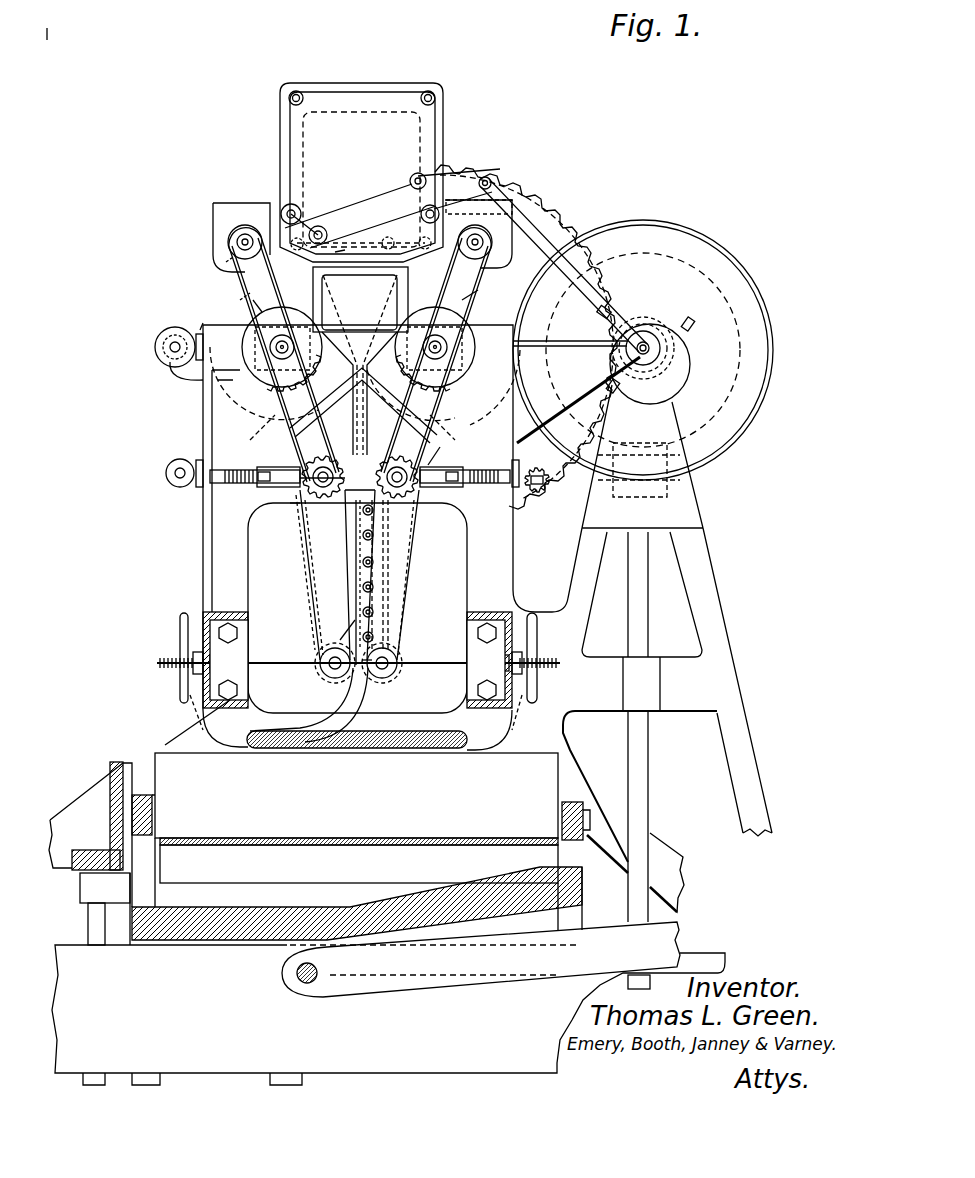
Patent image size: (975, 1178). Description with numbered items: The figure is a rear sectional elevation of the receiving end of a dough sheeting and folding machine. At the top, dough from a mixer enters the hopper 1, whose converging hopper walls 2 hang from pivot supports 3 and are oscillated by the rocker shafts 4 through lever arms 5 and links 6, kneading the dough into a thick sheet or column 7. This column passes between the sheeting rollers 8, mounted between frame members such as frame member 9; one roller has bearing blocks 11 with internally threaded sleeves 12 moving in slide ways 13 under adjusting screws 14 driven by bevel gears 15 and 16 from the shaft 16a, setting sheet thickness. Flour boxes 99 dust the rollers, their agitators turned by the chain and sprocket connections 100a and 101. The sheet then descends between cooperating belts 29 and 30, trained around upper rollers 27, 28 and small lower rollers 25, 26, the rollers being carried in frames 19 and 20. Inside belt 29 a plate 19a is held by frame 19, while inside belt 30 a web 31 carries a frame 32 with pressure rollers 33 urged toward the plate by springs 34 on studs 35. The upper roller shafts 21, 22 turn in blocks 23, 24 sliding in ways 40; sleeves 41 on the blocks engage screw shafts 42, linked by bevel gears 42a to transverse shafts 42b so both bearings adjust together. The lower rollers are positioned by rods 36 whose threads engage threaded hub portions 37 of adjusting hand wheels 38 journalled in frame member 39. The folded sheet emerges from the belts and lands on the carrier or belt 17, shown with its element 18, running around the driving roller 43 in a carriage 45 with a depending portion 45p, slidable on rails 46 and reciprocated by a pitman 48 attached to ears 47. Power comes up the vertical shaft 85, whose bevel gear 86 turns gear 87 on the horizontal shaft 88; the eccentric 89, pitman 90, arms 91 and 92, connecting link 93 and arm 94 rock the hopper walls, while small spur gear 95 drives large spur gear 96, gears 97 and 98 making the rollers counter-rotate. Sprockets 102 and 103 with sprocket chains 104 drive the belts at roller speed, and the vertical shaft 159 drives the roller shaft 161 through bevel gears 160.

The hopper 1 is at (436, 120).
The converging hopper walls 2 is at (300, 132).
The pivot supports 3 is at (294, 90).
The rocker shafts 4 is at (291, 206).
The lever arms 5 is at (296, 238).
The links 6 is at (352, 250).
The sheet or column of dough 7 is at (360, 361).
The sheeting rollers 8 is at (222, 315).
The frame member 9 is at (210, 540).
The bearing blocks 11 is at (320, 345).
The internally threaded sleeves 12 is at (358, 357).
The slide ways 13 is at (247, 294).
The adjusting screws 14 is at (225, 358).
The bevel gear 15 is at (198, 332).
The bevel gear 16 is at (154, 348).
The shaft 16a is at (168, 362).
The carrier or belt 17 is at (160, 740).
The conveyor belt 18 is at (430, 745).
The frame 19 is at (322, 558).
The plate 19a is at (352, 622).
The frame 20 is at (395, 566).
The shaft 21 is at (318, 538).
The shaft 22 is at (400, 540).
The block 23 is at (296, 510).
The block 24 is at (440, 470).
The lower roller 25 is at (330, 680).
The lower roller 26 is at (388, 680).
The upper roller 27 is at (322, 455).
The upper roller 28 is at (397, 455).
The belt 29 is at (310, 593).
The belt 30 is at (392, 585).
The web 31 is at (392, 600).
The frame 32 is at (376, 618).
The pressure rollers 33 is at (363, 590).
The springs 34 is at (378, 655).
The studs 35 is at (378, 640).
The rods 36 is at (278, 652).
The threaded hub portions 37 is at (208, 708).
The adjusting hand wheels 38 is at (180, 633).
The frame member 39 is at (210, 618).
The ways 40 is at (270, 488).
The internally threaded sleeves 41 is at (366, 473).
The screw shafts 42 is at (357, 473).
The bevel gears 42a is at (536, 468).
The transverse shafts 42b is at (166, 478).
The driving roller 43 is at (368, 841).
The carriage 45 is at (580, 891).
The depending portion 45p is at (270, 1080).
The rails 46 is at (388, 1072).
The ears 47 is at (295, 970).
The pitman 48 is at (378, 1000).
The vertical shaft 85 is at (650, 776).
The bevel gear 86 is at (690, 478).
The gear 87 is at (748, 416).
The horizontal shaft 88 is at (650, 338).
The eccentric 89 is at (690, 364).
The pitman 90 is at (568, 230).
The arm 91 is at (493, 185).
The arm 92 is at (414, 180).
The connecting link 93 is at (342, 238).
The arm 94 is at (320, 226).
The small spur gear 95 is at (643, 330).
The large spur gear 96 is at (552, 210).
The gear 97 is at (480, 300).
The gear 98 is at (228, 286).
The flour boxes 99 is at (213, 228).
The arm 100a is at (268, 295).
The chain and sprocket connection 101 is at (436, 355).
The sprockets 102 is at (332, 386).
The sprockets 103 is at (438, 448).
The sprocket chains 104 is at (278, 425).
The vertical shaft 159 is at (95, 945).
The bevel gears 160 is at (110, 826).
The shaft 161 is at (590, 808).